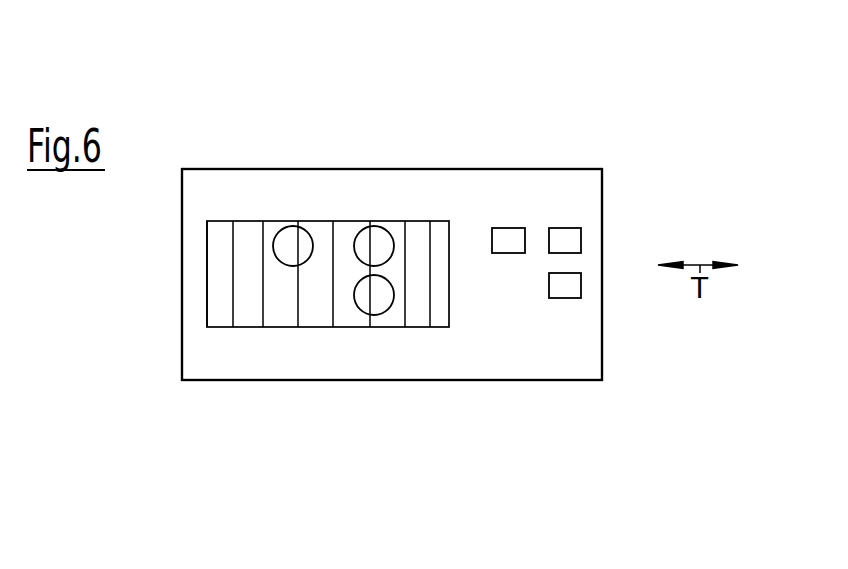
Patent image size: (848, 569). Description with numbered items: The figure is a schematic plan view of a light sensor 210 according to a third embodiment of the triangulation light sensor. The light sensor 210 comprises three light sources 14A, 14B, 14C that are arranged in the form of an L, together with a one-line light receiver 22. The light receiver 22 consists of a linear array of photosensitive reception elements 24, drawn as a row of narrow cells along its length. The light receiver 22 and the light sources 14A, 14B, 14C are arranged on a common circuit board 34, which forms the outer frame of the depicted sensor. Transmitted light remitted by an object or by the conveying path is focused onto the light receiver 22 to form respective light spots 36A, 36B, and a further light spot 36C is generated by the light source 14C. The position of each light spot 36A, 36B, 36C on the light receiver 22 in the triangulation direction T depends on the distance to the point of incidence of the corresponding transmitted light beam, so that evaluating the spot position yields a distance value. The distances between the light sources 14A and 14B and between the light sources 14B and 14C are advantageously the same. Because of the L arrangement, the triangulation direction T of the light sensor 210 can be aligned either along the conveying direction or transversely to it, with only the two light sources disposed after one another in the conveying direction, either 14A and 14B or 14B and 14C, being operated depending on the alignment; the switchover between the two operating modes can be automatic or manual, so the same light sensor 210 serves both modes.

The light sensor 210 is at (496, 95).
The common circuit board 34 is at (305, 168).
The reception elements 24 is at (220, 247).
The light receiver 22 is at (207, 272).
The light spot 36A is at (288, 248).
The light spot 36B is at (376, 242).
The light spot 36C is at (365, 302).
The light source 14A is at (507, 242).
The light source 14B is at (562, 240).
The light source 14C is at (566, 290).